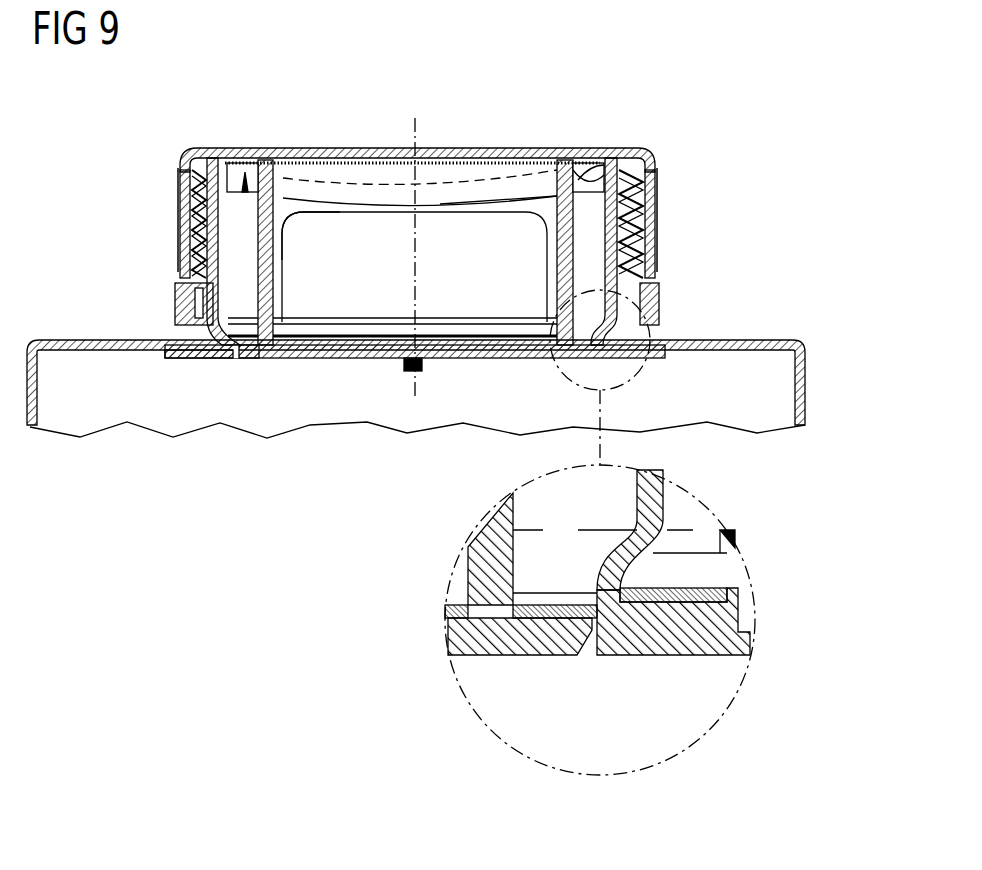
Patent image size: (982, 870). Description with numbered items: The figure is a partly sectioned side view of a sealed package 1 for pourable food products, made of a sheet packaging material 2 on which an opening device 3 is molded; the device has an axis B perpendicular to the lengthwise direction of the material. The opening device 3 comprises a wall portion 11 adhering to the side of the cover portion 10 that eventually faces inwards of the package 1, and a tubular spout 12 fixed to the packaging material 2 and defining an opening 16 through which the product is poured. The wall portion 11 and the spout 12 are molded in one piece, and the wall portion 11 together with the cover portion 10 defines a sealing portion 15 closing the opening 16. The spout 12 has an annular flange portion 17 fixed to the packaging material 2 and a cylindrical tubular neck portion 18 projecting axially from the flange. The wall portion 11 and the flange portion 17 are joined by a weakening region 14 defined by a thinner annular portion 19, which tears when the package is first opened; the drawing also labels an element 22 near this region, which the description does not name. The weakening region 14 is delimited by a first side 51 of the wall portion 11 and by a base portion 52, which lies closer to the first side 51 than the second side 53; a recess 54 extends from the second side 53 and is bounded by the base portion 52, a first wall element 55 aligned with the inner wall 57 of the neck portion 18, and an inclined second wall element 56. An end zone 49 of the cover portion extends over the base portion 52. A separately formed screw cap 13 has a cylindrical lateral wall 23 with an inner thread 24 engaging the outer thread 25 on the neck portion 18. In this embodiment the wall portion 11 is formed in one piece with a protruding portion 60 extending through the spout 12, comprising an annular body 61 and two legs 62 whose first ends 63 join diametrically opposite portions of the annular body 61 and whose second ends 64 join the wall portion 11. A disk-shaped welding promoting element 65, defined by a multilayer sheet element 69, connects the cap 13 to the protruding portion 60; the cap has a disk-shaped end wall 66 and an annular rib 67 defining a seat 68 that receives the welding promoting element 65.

The package 1 is at (757, 140).
The packaging material 2 is at (94, 336).
The opening device 3 is at (186, 156).
The cover portion 10 is at (445, 610).
The wall portion 11 is at (371, 345).
The tubular spout 12 is at (615, 330).
The cap 13 is at (207, 147).
The weakening region 14 is at (590, 605).
The sealing portion 15 is at (343, 366).
The opening 16 is at (255, 158).
The annular flange portion 17 is at (163, 352).
The cylindrical tubular neck portion 18 is at (180, 307).
The annular portion 19 is at (222, 366).
The support web 22 is at (268, 355).
The cylindrical lateral wall 23 is at (655, 172).
The inner thread 24 is at (637, 241).
The outer thread 25 is at (196, 240).
The end zone 49 is at (624, 555).
The first side 51 is at (455, 606).
The base portion 52 is at (589, 660).
The second side 53 is at (478, 656).
The recess 54 is at (582, 674).
The first wall element 55 is at (613, 657).
The second wall element 56 is at (582, 657).
The inner wall 57 is at (637, 478).
The protruding portion 60 is at (274, 280).
The annular body 61 is at (604, 154).
The legs 62 is at (564, 258).
The first ends 63 is at (285, 215).
The second ends 64 is at (563, 363).
The welding promoting element 65 is at (391, 190).
The end wall 66 is at (463, 172).
The annular rib 67 is at (186, 188).
The seat 68 is at (242, 200).
The multilayer sheet element 69 is at (519, 172).
The axis B is at (425, 128).